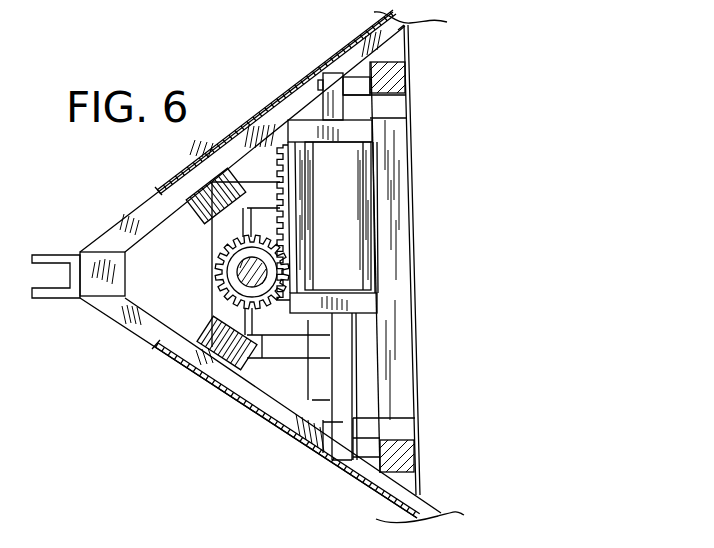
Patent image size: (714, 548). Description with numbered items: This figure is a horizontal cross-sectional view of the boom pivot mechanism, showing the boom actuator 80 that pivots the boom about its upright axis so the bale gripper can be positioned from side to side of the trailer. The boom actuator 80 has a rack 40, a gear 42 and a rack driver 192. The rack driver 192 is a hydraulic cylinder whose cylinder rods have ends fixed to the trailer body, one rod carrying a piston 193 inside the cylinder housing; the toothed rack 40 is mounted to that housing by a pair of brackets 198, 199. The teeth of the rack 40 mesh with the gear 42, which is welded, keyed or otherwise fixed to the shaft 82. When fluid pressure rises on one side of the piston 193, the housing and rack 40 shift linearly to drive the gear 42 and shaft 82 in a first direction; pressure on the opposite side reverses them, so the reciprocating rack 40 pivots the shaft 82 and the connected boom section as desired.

The rack 40 is at (278, 178).
The gear 42 is at (220, 287).
The boom actuator 80 is at (280, 298).
The shaft 82 is at (245, 258).
The rack driver 192 is at (355, 396).
The piston 193 is at (358, 220).
The bracket 198 is at (353, 335).
The bracket 199 is at (307, 122).